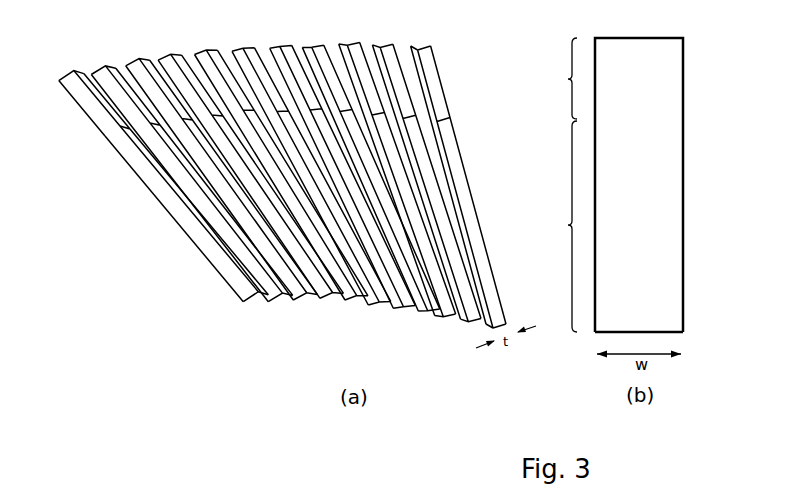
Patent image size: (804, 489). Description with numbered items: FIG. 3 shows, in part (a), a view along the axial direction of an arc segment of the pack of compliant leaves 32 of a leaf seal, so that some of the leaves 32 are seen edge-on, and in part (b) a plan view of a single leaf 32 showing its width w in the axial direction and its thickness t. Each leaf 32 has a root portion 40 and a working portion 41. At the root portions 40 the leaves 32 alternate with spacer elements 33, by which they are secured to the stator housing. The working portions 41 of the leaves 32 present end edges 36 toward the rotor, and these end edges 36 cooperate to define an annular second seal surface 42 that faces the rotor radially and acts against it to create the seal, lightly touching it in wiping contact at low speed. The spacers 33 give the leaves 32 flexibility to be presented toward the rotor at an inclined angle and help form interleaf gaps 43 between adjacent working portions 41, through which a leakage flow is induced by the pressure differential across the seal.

The leaf 32 is at (130, 173).
The spacer element 33 is at (76, 66).
The end edge 36 is at (243, 303).
The root portion 40 is at (92, 114).
The working portion 41 is at (176, 218).
The second seal surface 42 is at (332, 311).
The interleaf gap 43 is at (446, 136).